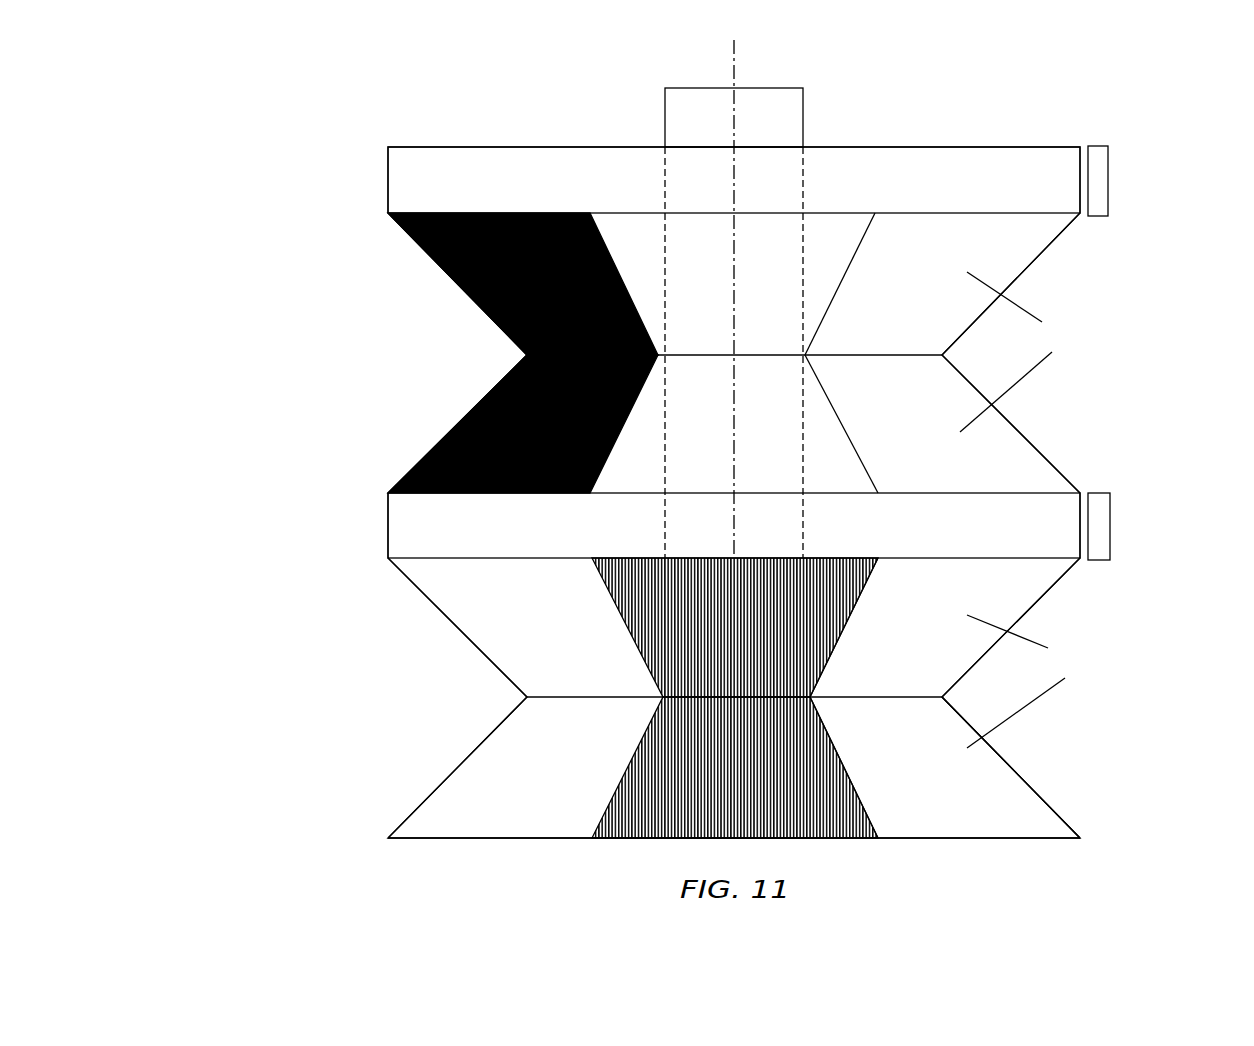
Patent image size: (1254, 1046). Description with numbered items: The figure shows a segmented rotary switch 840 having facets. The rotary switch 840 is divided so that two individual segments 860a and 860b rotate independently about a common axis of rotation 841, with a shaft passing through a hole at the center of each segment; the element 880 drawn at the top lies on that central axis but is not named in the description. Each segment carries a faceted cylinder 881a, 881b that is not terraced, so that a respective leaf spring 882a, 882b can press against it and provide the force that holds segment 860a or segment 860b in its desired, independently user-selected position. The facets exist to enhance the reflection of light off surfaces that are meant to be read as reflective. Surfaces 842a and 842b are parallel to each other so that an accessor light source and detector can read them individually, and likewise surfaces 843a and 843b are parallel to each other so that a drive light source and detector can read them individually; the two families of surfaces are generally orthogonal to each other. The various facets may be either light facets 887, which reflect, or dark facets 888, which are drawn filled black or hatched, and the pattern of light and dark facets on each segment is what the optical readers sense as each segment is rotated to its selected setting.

The rotary switch 840 is at (303, 332).
The axis of rotation 841 is at (733, 58).
The surface 842a is at (458, 423).
The surface 843a is at (458, 285).
The surface 842b is at (457, 765).
The surface 843b is at (453, 628).
The segment 860a is at (1042, 177).
The segment 860b is at (1027, 535).
The central post 880 is at (663, 107).
The faceted cylinder 881a is at (387, 183).
The faceted cylinder 881b is at (388, 540).
The leaf spring 882a is at (1108, 192).
The leaf spring 882b is at (1110, 530).
The light facets 887 is at (1012, 807).
The dark facets 888 is at (847, 617).